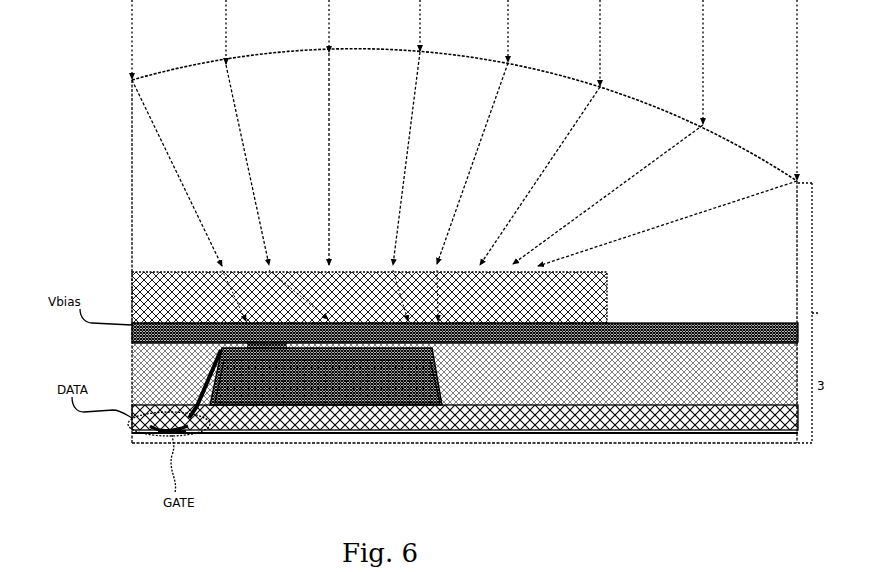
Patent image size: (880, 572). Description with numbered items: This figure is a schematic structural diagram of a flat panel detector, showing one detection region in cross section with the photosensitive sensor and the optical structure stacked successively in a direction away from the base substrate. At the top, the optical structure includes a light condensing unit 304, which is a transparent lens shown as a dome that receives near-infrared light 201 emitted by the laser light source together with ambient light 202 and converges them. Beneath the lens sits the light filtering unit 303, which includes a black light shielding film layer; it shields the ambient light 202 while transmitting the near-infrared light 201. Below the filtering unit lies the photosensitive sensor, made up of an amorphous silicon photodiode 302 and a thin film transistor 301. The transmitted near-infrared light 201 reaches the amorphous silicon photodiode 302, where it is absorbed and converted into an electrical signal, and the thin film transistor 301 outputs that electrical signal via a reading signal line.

The near-infrared light 201 is at (464, 90).
The ambient light 202 is at (464, 177).
The thin film transistor 301 is at (121, 427).
The amorphous silicon photodiode 302 is at (333, 398).
The light filtering unit 303 is at (132, 297).
The light condensing unit 304 is at (132, 208).